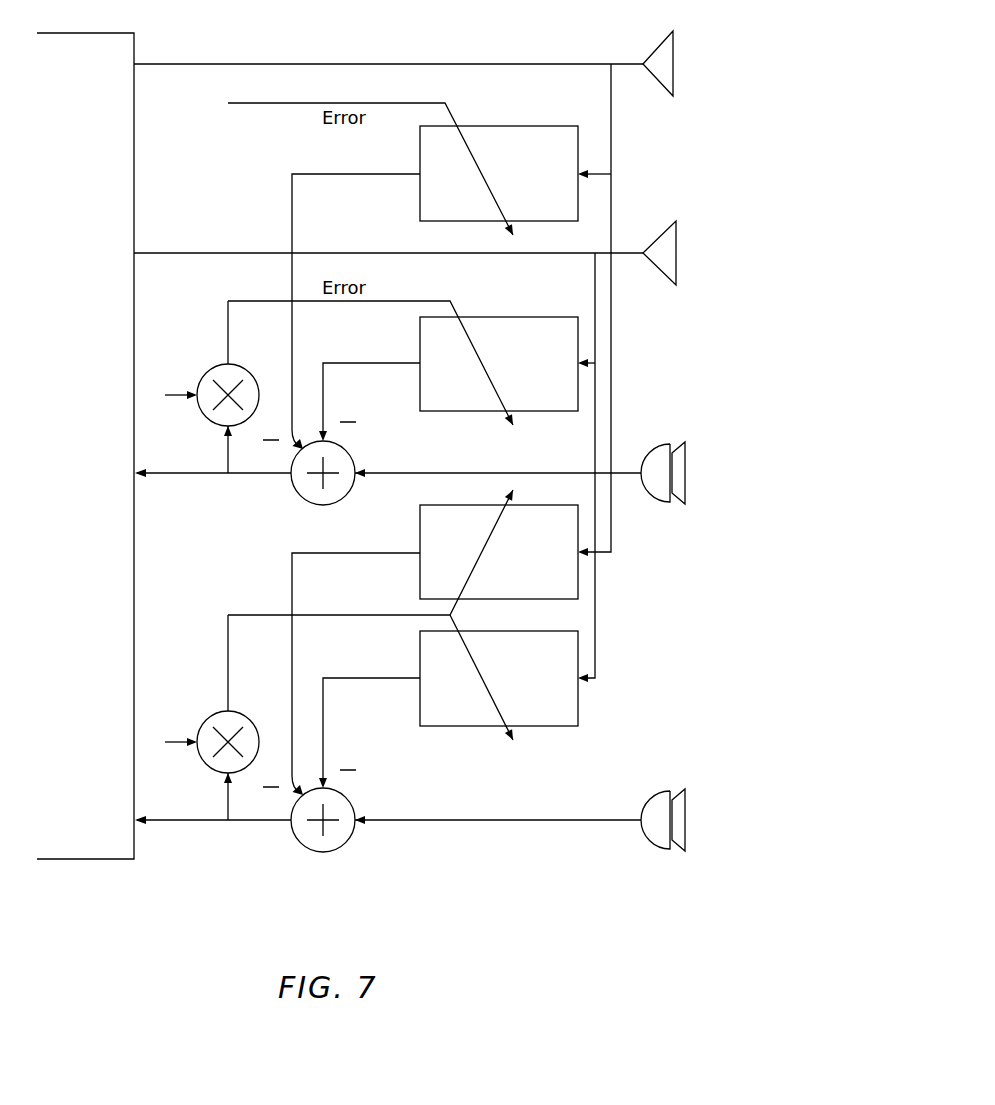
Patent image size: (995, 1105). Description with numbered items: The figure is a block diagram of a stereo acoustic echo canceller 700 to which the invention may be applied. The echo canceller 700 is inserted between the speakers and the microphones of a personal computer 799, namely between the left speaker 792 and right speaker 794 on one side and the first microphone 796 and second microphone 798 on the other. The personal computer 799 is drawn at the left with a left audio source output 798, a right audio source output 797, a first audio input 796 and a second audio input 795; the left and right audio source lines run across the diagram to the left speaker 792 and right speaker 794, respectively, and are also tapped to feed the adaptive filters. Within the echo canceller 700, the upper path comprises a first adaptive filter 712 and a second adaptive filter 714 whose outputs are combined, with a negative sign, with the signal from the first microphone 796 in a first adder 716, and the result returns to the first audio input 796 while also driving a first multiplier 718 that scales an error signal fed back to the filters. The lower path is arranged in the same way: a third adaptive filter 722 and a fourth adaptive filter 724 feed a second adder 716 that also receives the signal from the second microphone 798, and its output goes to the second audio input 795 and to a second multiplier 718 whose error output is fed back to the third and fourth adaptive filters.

The stereo acoustic echo canceller 700 is at (436, 22).
The first adaptive filter 712 is at (505, 123).
The second adaptive filter 714 is at (500, 314).
The adder 716 is at (296, 496).
The multiplier 718 is at (215, 366).
The third adaptive filter 722 is at (420, 522).
The fourth adaptive filter 724 is at (453, 727).
The left speaker 792 is at (755, 63).
The right speaker 794 is at (762, 253).
The second audio input 795 is at (164, 815).
The first microphone 796 is at (428, 476).
The right audio source output 797 is at (332, 268).
The second microphone 798 is at (414, 450).
The personal computer 799 is at (83, 446).